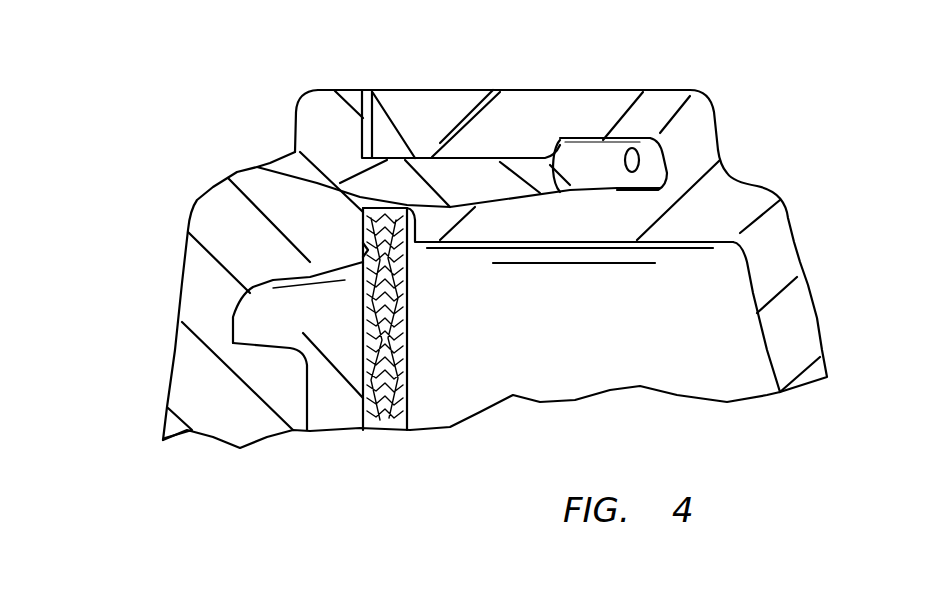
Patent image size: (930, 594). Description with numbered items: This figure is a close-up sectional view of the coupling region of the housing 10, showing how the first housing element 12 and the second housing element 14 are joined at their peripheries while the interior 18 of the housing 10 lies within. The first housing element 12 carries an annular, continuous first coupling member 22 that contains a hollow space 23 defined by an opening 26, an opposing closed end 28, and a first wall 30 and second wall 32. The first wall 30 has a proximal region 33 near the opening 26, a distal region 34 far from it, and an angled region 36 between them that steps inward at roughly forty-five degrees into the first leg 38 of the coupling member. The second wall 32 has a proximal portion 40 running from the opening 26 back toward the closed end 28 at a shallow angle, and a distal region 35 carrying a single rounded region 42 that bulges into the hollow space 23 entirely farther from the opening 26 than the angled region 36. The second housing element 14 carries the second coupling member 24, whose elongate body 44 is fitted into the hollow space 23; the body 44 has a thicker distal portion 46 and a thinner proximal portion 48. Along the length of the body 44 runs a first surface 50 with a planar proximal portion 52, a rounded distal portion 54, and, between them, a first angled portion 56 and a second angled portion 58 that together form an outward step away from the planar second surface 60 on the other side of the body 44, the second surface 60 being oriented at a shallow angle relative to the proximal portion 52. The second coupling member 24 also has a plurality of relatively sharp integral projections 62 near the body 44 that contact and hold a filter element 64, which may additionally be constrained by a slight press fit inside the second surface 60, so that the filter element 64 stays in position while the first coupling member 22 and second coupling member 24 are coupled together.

The housing 10 is at (163, 180).
The first housing element 12 is at (798, 206).
The second housing element 14 is at (156, 431).
The interior 18 is at (562, 386).
The first coupling member 22 is at (578, 80).
The hollow space 23 is at (660, 143).
The second coupling member 24 is at (313, 89).
The opening 26 is at (380, 150).
The closed end 28 is at (663, 158).
The first wall 30 is at (445, 158).
The second wall 32 is at (478, 215).
The proximal region 33 is at (430, 157).
The distal region 34 is at (620, 135).
The distal region 35 is at (548, 195).
The angled region 36 is at (553, 140).
The first leg 38 is at (470, 104).
The proximal portion 40 is at (437, 210).
The rounded region 42 is at (603, 190).
The elongate body 44 is at (493, 194).
The distal portion 46 is at (590, 179).
The proximal portion 48 is at (407, 197).
The first surface 50 is at (340, 183).
The proximal portion 52 is at (507, 215).
The distal portion 54 is at (597, 143).
The first angled portion 56 is at (545, 190).
The second angled portion 58 is at (590, 143).
The second surface 60 is at (363, 209).
The projections 62 is at (363, 250).
The filter element 64 is at (392, 408).